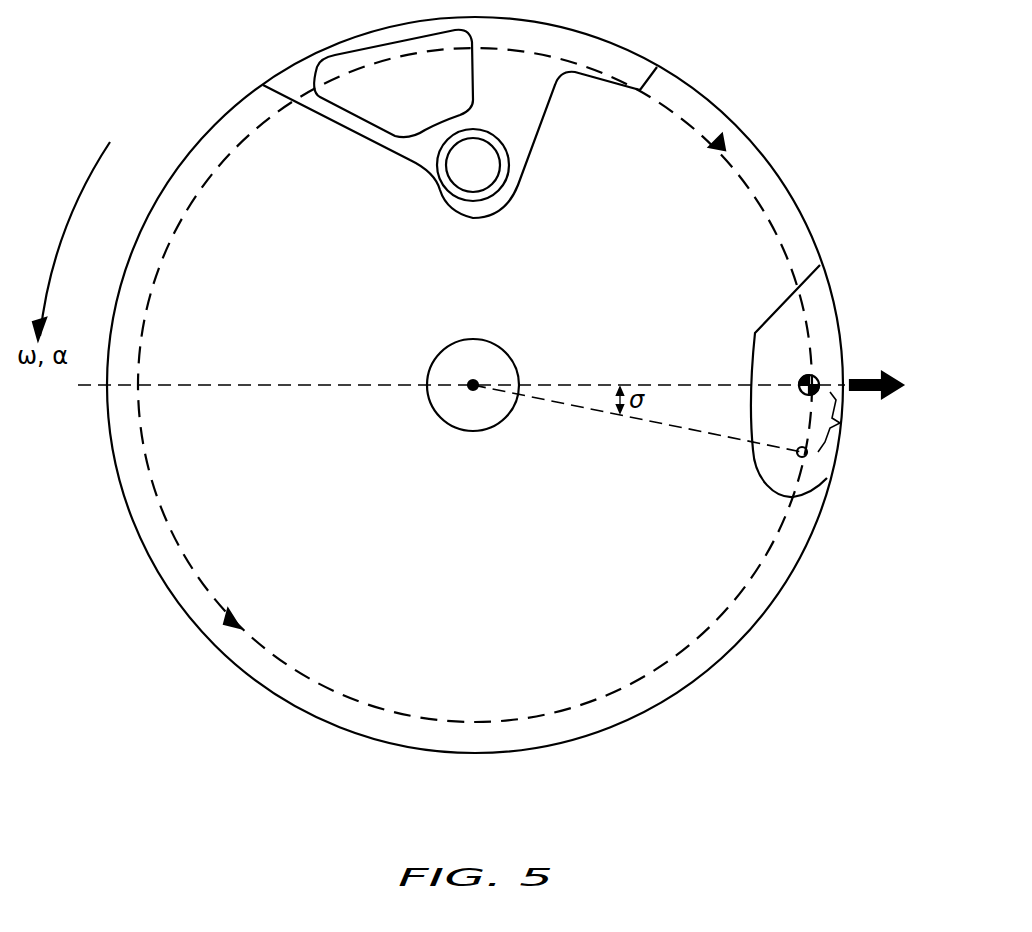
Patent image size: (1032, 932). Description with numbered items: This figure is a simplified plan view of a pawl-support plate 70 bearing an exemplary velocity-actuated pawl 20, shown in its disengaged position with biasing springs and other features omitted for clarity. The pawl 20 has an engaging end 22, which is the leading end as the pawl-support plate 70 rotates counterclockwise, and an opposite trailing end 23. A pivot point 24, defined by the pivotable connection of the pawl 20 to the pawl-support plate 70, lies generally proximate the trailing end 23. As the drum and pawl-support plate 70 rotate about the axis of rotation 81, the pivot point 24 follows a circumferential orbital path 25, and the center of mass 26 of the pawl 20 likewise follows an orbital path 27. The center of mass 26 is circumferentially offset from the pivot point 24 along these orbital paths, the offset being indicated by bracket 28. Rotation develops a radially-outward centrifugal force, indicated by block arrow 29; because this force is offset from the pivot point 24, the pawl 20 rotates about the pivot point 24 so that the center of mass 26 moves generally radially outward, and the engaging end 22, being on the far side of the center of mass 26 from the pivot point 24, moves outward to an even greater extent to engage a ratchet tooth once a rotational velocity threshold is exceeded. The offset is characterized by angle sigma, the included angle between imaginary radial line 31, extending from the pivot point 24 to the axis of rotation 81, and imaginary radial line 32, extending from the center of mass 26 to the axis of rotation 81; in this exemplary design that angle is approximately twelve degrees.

The velocity-actuated pawl 20 is at (857, 313).
The engaging end 22 is at (840, 244).
The trailing end 23 is at (830, 507).
The pivot point 24 is at (800, 456).
The orbital path 25 is at (712, 624).
The center of mass 26 is at (809, 378).
The orbital path 27 is at (757, 201).
The bracket 28 is at (840, 423).
The block arrow 29 is at (866, 380).
The imaginary line 31 is at (660, 420).
The imaginary line 32 is at (662, 386).
The pawl-support plate 70 is at (203, 612).
The axis of rotation 81 is at (473, 385).